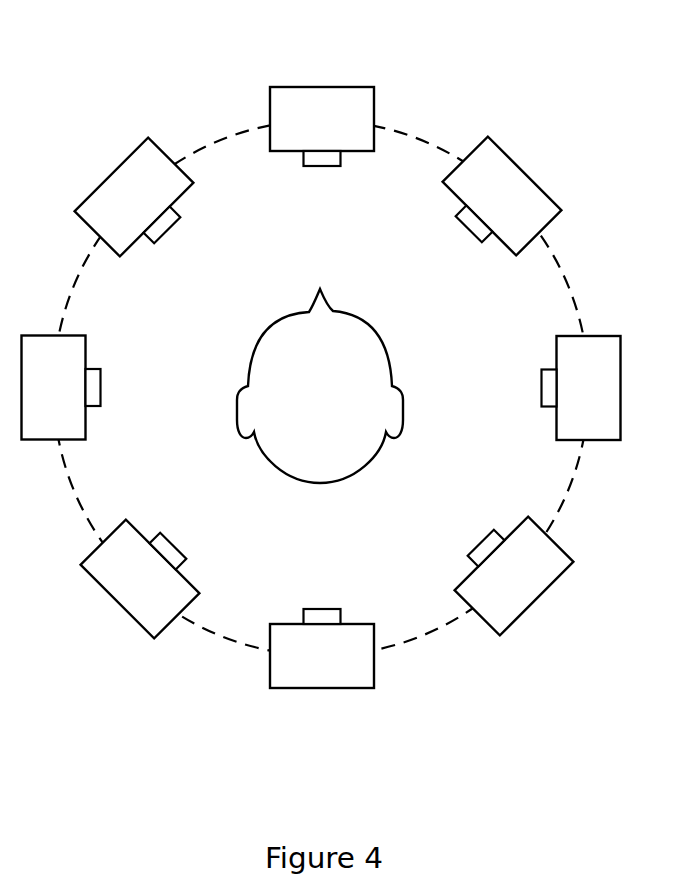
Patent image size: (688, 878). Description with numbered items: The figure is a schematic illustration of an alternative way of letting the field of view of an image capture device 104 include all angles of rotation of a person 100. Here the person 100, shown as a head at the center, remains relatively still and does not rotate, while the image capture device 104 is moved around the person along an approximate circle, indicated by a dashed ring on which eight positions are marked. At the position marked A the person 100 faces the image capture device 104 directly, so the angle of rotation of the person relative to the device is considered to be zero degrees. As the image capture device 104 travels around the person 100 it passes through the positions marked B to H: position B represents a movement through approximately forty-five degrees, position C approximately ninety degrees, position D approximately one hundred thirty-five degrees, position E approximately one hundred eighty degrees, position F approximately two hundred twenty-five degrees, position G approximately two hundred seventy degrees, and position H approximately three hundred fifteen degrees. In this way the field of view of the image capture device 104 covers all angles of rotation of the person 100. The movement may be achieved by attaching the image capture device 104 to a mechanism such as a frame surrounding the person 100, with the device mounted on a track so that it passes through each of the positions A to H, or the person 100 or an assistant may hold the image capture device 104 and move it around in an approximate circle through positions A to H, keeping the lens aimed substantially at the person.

The person 100 is at (393, 367).
The image capture device 104 is at (334, 86).
The position A is at (322, 126).
The position B is at (496, 201).
The position C is at (581, 388).
The position D is at (508, 570).
The position E is at (322, 648).
The position F is at (145, 573).
The position G is at (61, 388).
The position H is at (139, 202).